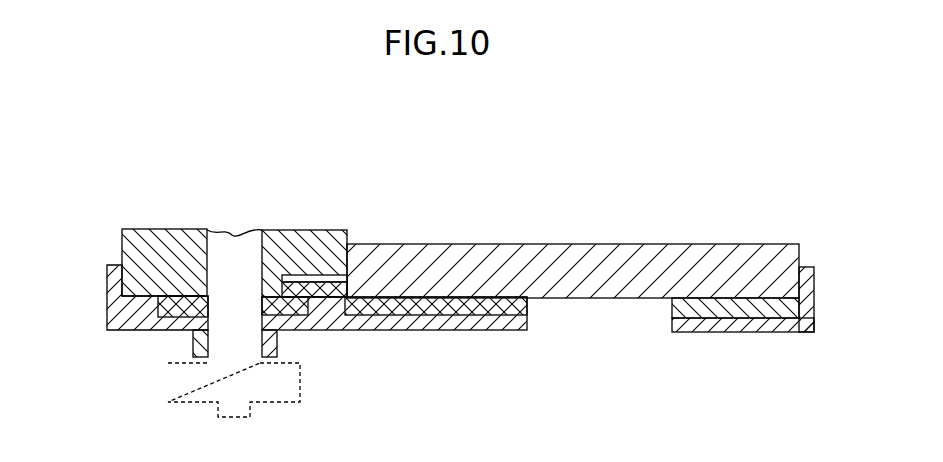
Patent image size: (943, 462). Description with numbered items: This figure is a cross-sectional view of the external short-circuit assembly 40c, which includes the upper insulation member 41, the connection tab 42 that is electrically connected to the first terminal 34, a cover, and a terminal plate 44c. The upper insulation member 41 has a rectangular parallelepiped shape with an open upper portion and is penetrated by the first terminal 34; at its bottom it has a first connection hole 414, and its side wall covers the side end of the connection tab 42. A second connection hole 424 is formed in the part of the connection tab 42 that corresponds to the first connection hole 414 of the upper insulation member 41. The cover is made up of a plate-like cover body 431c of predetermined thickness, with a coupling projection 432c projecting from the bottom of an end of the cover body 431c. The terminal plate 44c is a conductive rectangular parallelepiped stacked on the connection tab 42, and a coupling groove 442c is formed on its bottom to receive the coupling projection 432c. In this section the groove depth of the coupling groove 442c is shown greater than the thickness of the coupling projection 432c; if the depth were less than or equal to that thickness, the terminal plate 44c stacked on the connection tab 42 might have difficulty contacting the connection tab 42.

The external short-circuit assembly 40c is at (460, 121).
The first terminal 34 is at (234, 243).
The upper insulation member 41 is at (120, 313).
The connection tab 42 is at (153, 331).
The terminal plate 44c is at (165, 228).
The coupling groove 442c is at (320, 272).
The cover body 431c is at (710, 262).
The coupling projection 432c is at (338, 303).
The first connection hole 414 is at (527, 332).
The second connection hole 424 is at (667, 305).